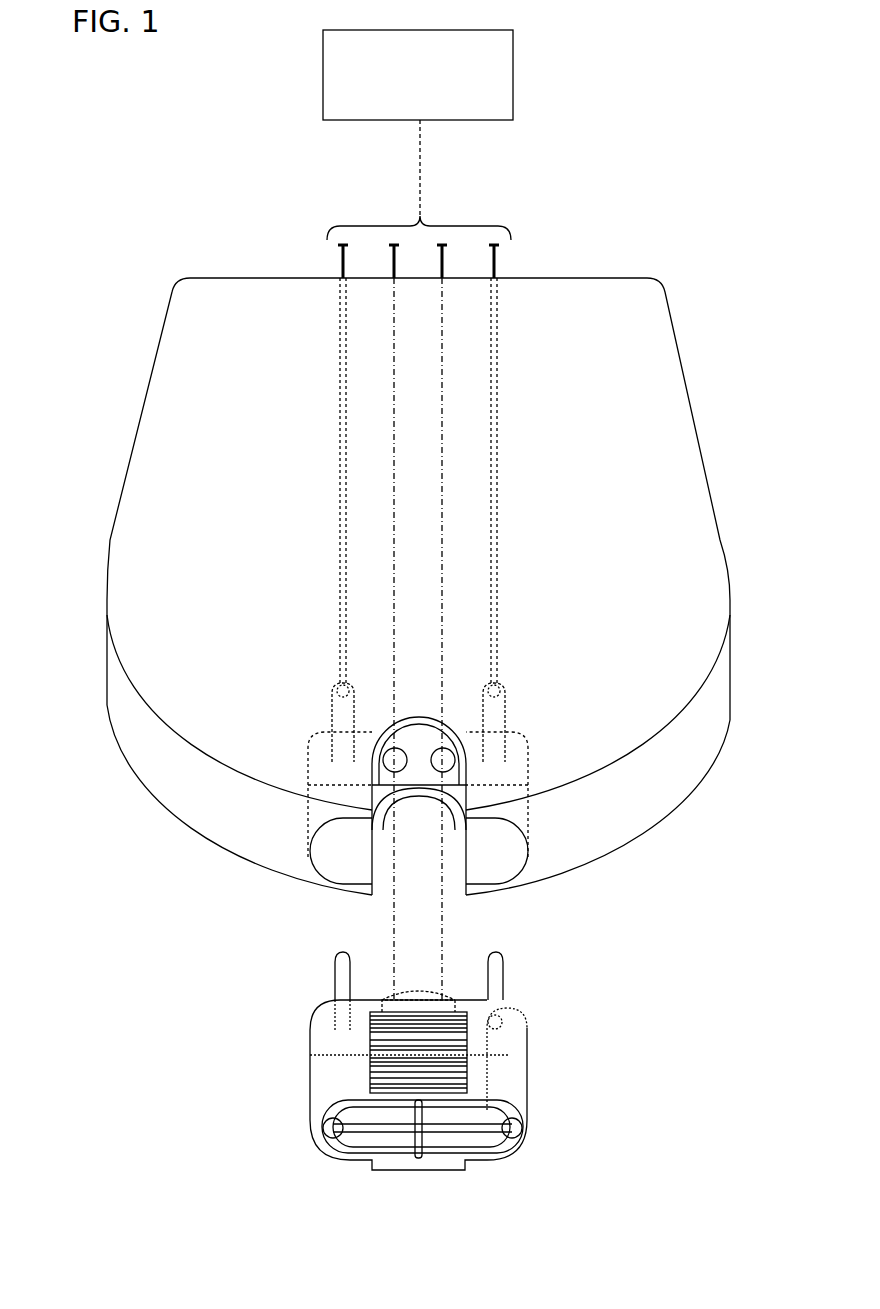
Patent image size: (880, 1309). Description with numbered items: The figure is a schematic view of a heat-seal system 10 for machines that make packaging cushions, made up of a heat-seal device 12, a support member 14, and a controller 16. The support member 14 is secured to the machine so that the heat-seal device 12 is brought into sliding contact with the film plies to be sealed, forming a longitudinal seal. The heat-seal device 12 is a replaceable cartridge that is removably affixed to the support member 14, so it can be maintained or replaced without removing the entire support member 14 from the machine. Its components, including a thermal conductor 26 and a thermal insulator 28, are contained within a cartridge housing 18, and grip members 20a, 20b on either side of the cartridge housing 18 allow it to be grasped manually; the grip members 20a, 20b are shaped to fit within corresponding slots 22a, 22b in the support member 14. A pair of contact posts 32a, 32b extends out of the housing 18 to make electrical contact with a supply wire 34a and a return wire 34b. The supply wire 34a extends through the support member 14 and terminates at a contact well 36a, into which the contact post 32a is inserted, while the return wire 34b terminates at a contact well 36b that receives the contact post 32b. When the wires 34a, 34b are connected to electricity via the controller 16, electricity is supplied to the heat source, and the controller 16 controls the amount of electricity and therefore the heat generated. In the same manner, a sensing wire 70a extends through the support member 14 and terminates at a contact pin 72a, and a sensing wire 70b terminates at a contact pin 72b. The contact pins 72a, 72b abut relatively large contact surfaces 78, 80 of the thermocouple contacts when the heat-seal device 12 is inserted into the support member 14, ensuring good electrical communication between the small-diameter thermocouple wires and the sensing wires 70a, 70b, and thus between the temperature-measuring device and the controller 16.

The heat-seal system 10 is at (656, 172).
The heat-seal device 12 is at (530, 1075).
The support member 14 is at (670, 778).
The controller 16 is at (513, 72).
The cartridge housing 18 is at (325, 1063).
The grip member 20a is at (510, 1012).
The grip member 20b is at (450, 1172).
The slot 22a is at (455, 794).
The slot 22b is at (387, 888).
The thermal conductor 26 is at (364, 1133).
The thermal insulator 28 is at (402, 1142).
The contact post 32a is at (505, 975).
The contact post 32b is at (333, 977).
The supply wire 34a is at (497, 258).
The return wire 34b is at (338, 262).
The contact well 36a is at (505, 710).
The contact well 36b is at (334, 712).
The sensing wire 70a is at (447, 258).
The sensing wire 70b is at (390, 258).
The contact pin 72a is at (447, 752).
The contact pin 72b is at (392, 752).
The contact surface 78 is at (426, 995).
The contact surface 80 is at (392, 1015).